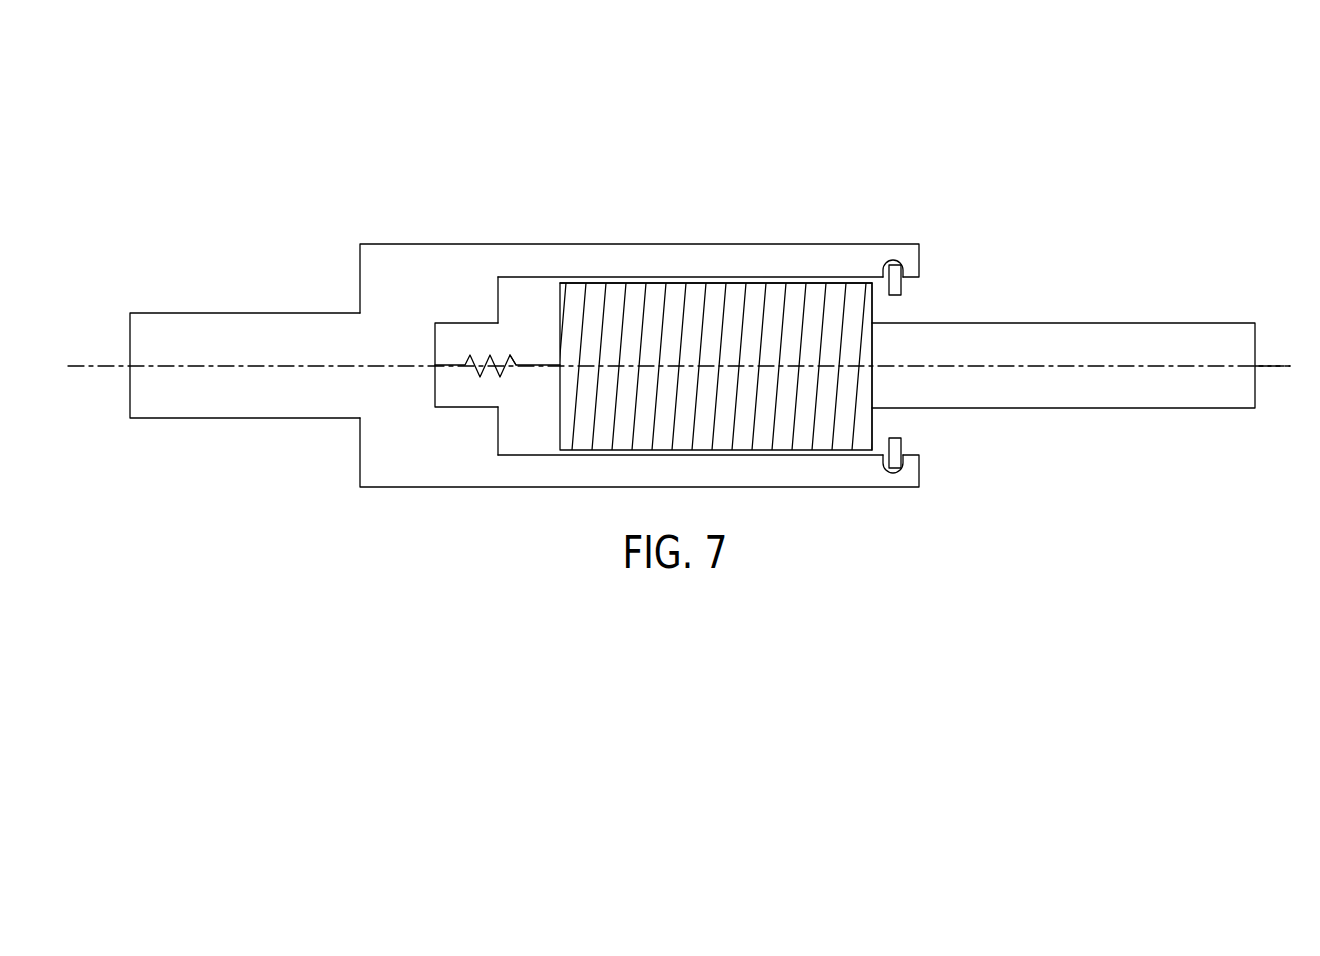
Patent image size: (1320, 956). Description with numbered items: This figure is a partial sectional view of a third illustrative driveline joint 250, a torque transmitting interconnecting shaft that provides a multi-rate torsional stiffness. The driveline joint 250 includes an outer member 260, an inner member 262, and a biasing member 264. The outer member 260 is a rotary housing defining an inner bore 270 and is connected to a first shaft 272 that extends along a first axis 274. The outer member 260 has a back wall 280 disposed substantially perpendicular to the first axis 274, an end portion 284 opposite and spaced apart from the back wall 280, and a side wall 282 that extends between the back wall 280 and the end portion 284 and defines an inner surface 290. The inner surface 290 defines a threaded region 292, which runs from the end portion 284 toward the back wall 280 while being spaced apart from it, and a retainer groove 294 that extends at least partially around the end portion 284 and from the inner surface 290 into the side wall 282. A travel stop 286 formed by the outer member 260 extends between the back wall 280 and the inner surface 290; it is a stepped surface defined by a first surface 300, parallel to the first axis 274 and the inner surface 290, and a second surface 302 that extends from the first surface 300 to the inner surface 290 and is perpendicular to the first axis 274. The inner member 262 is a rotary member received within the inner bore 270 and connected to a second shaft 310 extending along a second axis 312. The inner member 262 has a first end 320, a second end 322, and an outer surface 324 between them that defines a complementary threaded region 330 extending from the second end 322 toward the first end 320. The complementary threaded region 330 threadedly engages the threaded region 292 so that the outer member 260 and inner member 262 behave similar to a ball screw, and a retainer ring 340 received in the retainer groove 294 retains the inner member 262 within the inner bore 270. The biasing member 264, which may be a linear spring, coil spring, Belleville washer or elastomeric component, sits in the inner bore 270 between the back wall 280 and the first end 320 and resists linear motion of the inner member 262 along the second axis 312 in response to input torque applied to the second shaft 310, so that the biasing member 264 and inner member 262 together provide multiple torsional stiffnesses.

The driveline joint 250 is at (840, 110).
The outer member 260 is at (348, 236).
The inner member 262 is at (908, 305).
The biasing member 264 is at (510, 372).
The inner bore 270 is at (500, 441).
The first shaft 272 is at (220, 328).
The first axis 274 is at (85, 368).
The back wall 280 is at (433, 356).
The side wall 282 is at (562, 277).
The end portion 284 is at (910, 258).
The travel stop 286 is at (497, 310).
The inner surface 290 is at (680, 282).
The threaded region 292 is at (633, 262).
The retainer groove 294 is at (895, 261).
The first surface 300 is at (467, 323).
The second surface 302 is at (503, 290).
The second shaft 310 is at (1098, 333).
The second axis 312 is at (1278, 368).
The first end 320 is at (557, 435).
The second end 322 is at (874, 418).
The outer surface 324 is at (737, 327).
The complementary threaded region 330 is at (784, 340).
The retainer ring 340 is at (898, 452).